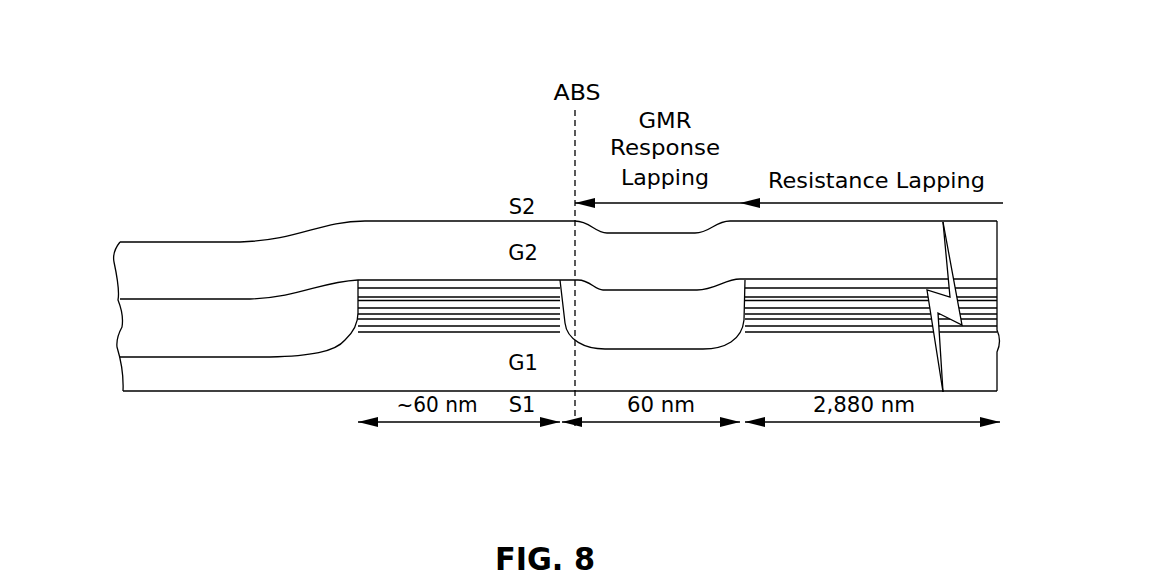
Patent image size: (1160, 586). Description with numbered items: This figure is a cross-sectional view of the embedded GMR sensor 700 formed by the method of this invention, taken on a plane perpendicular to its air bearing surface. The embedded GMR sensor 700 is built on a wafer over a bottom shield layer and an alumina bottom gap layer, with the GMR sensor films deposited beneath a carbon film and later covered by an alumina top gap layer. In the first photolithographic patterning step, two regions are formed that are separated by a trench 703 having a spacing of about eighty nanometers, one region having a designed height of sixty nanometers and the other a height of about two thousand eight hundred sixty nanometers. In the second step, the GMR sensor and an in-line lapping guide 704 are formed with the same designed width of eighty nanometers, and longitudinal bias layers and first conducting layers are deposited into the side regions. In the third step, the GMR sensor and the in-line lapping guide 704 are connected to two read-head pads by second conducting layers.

The embedded GMR sensor 700 is at (566, 210).
The trench 703 is at (647, 315).
The in-line lapping guide 704 is at (862, 315).